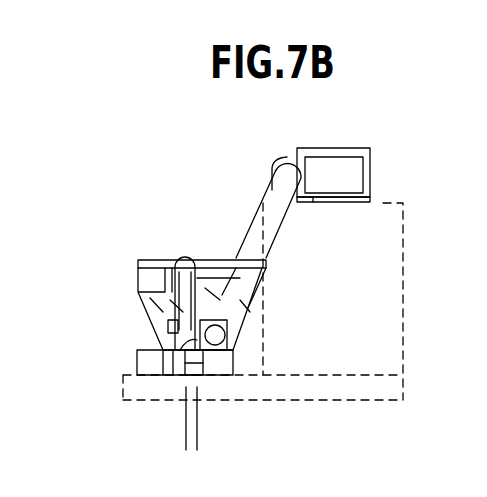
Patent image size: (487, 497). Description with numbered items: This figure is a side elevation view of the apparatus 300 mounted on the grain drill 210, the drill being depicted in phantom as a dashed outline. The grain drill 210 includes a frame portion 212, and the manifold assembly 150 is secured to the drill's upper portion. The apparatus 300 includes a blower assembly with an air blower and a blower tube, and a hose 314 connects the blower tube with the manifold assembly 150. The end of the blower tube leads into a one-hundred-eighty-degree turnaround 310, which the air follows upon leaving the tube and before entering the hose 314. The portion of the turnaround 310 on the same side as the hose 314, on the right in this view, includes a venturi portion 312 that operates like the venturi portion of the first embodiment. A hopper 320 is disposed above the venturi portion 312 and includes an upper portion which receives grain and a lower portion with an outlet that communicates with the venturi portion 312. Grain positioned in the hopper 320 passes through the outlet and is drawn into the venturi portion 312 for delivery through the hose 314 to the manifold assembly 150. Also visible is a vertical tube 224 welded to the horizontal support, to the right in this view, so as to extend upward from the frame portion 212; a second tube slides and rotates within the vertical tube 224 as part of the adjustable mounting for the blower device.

The manifold assembly 150 is at (371, 180).
The grain drill 210 is at (407, 254).
The frame portion 212 is at (315, 390).
The vertical tube 224 is at (200, 423).
The apparatus 300 is at (336, 197).
The 180° turnaround 310 is at (170, 374).
The venturi portion 312 is at (225, 337).
The hose 314 is at (272, 194).
The hopper 320 is at (148, 260).